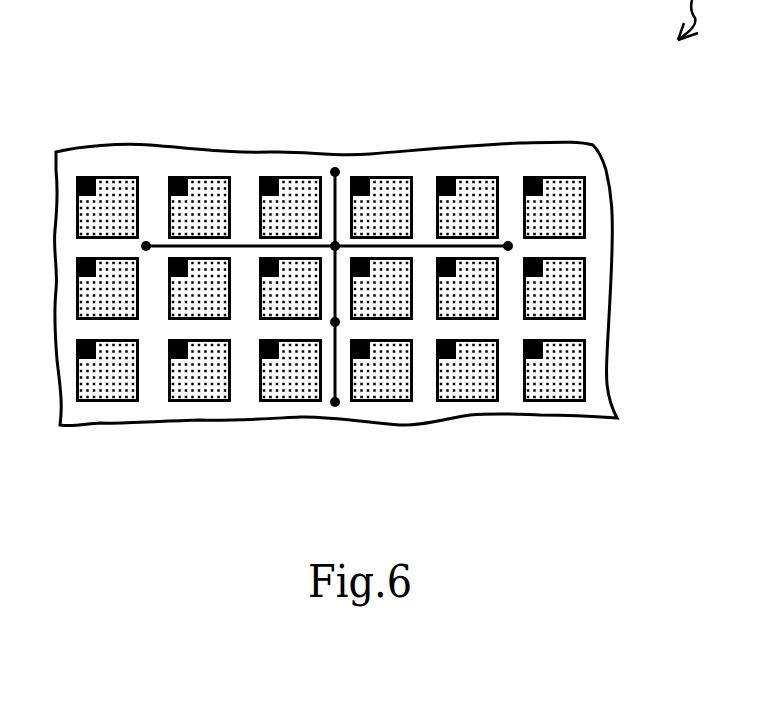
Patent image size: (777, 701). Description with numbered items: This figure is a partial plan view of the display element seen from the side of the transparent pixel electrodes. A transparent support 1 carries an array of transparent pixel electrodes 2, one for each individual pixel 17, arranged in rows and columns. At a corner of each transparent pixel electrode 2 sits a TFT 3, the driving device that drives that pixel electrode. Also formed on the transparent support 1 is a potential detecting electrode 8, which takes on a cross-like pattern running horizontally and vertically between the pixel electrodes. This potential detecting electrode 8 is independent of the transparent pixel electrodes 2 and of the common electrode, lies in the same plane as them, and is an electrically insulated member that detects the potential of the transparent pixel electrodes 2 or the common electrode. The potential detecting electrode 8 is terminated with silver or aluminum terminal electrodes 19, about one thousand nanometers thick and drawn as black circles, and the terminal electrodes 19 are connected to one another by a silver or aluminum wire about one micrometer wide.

The transparent support 1 is at (592, 380).
The transparent pixel electrode 2 is at (490, 390).
The TFT 3 is at (446, 177).
The potential detecting electrode 8 is at (508, 246).
The pixel 17 is at (106, 400).
The terminal electrode 19 is at (335, 172).